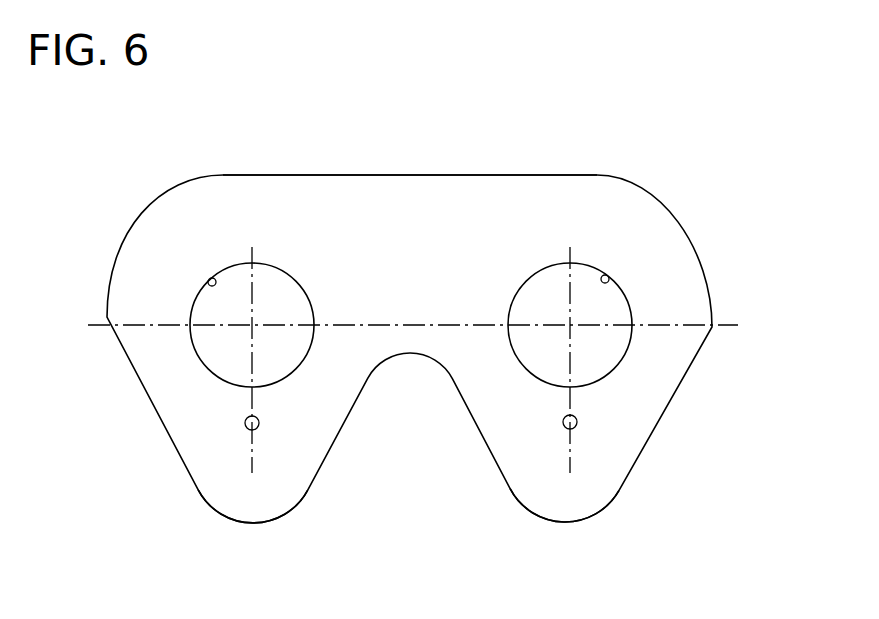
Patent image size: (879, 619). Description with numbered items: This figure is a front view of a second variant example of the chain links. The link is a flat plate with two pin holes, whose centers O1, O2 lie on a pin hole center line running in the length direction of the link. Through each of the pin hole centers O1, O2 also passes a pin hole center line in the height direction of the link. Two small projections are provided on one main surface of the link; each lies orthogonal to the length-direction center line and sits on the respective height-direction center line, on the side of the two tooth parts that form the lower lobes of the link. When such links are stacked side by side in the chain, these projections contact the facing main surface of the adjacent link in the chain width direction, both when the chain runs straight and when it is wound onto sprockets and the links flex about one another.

The pin hole center O1 is at (234, 360).
The pin hole center O2 is at (551, 360).